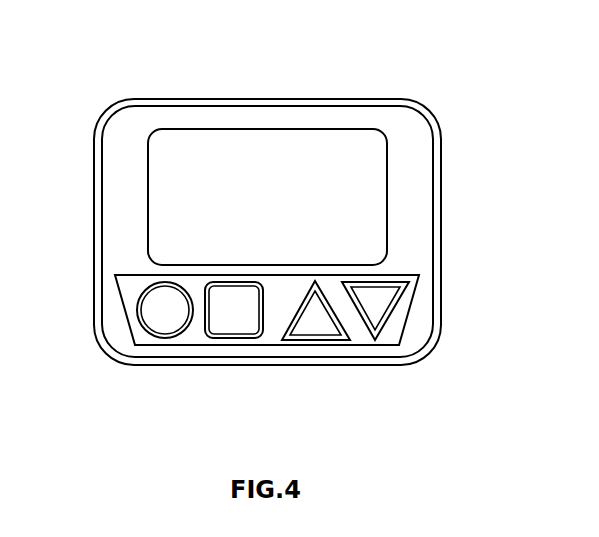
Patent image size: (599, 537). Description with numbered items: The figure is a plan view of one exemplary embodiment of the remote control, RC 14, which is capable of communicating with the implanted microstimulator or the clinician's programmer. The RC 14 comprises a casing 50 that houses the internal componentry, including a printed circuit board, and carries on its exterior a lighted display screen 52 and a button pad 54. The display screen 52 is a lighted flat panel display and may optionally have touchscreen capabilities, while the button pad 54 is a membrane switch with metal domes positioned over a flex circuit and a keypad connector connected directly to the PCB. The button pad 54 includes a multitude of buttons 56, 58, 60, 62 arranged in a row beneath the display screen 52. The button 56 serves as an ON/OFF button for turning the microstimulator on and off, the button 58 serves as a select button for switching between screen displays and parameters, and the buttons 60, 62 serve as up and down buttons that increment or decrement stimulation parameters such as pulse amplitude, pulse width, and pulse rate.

The RC (remote control) 14 is at (427, 112).
The casing 50 is at (418, 187).
The display screen 52 is at (282, 143).
The button pad 54 is at (130, 293).
The button 56 is at (167, 322).
The button 58 is at (243, 323).
The button 60 is at (323, 324).
The button 62 is at (377, 313).